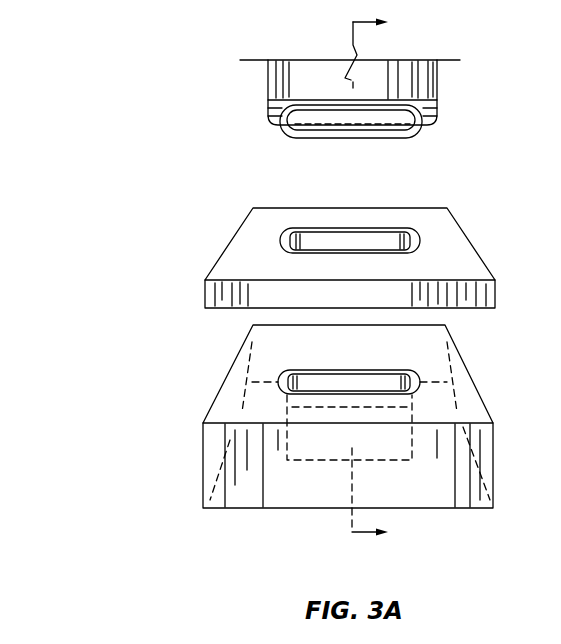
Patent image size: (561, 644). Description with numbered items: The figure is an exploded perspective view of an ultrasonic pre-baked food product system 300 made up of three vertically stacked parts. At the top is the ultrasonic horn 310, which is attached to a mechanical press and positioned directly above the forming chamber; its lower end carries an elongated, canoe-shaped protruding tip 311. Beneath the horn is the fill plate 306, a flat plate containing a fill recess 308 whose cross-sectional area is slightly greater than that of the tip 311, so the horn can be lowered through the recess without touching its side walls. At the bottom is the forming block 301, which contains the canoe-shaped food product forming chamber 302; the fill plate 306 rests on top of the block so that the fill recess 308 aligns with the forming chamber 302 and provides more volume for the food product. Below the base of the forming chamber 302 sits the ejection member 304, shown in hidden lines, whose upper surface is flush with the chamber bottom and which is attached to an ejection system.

The ultrasonic pre-baked food product system 300 is at (125, 70).
The forming block 301 is at (310, 444).
The food product forming chamber 302 is at (360, 377).
The ejection member 304 is at (302, 462).
The fill plate 306 is at (323, 244).
The fill recess 308 is at (350, 240).
The ultrasonic horn 310 is at (322, 89).
The protruding tip 311 is at (386, 137).